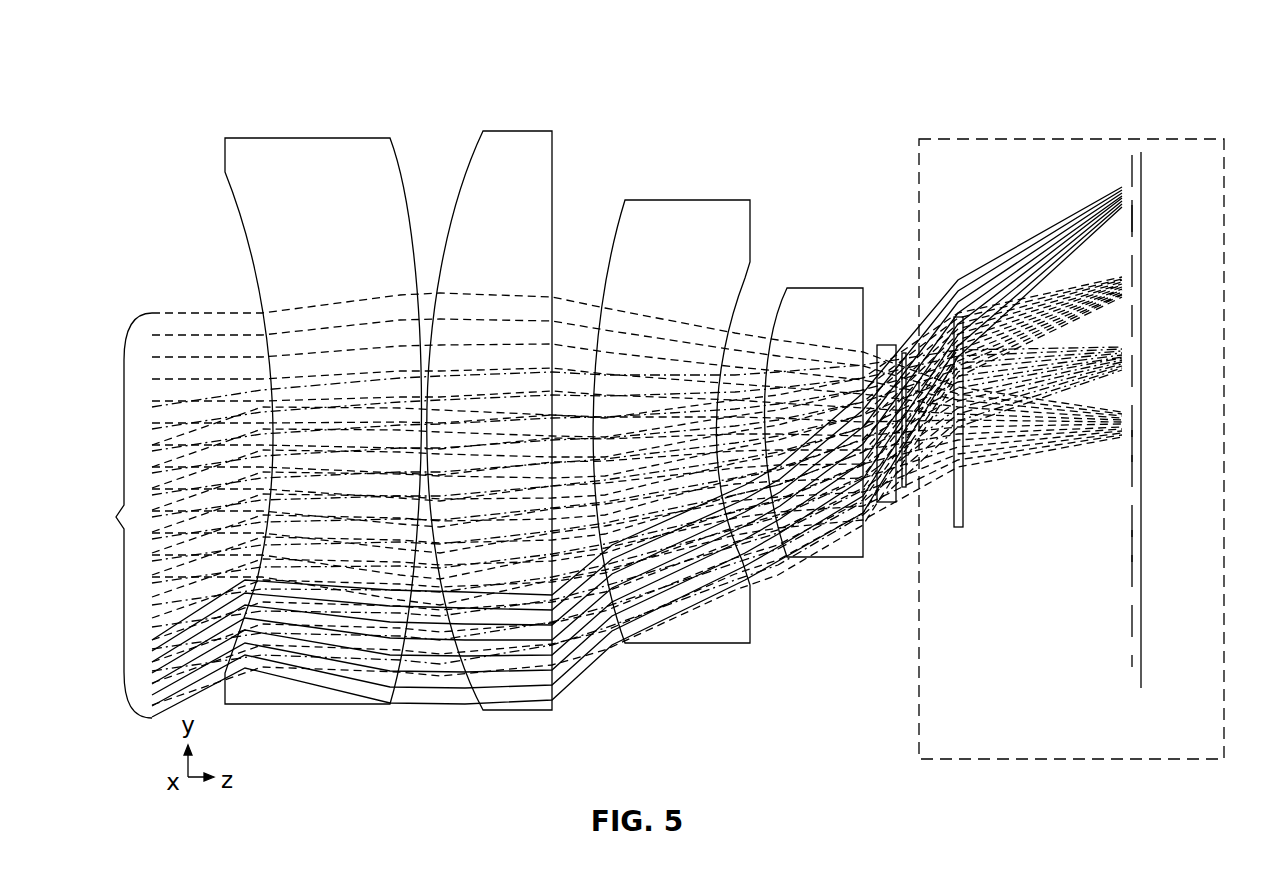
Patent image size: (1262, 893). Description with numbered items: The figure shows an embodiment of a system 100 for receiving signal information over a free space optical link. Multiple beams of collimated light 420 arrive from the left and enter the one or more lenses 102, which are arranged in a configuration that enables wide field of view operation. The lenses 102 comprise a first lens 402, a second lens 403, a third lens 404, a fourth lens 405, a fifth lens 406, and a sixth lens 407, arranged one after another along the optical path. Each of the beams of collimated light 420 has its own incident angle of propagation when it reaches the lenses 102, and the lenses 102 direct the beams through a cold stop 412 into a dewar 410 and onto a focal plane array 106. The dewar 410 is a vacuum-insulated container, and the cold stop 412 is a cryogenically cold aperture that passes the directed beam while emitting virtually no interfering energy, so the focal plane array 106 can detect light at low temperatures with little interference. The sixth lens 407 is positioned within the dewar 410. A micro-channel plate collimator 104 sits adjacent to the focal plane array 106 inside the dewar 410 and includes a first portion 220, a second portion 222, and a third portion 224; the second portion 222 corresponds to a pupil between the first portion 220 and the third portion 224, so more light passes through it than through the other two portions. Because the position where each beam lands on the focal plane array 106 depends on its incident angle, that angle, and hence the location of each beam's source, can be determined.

The system 100 is at (204, 74).
The lenses 102 is at (903, 79).
The micro-channel plate collimator 104 is at (1132, 657).
The focal plane array 106 is at (1143, 665).
The first portion 220 is at (1135, 228).
The second portion 222 is at (1130, 448).
The third portion 224 is at (1132, 557).
The first lens 402 is at (309, 138).
The second lens 403 is at (517, 131).
The third lens 404 is at (688, 200).
The fourth lens 405 is at (825, 288).
The fifth lens 406 is at (884, 345).
The sixth lens 407 is at (958, 317).
The dewar 410 is at (1150, 139).
The cold stop 412 is at (905, 353).
The beams of collimated light 420 is at (586, 452).